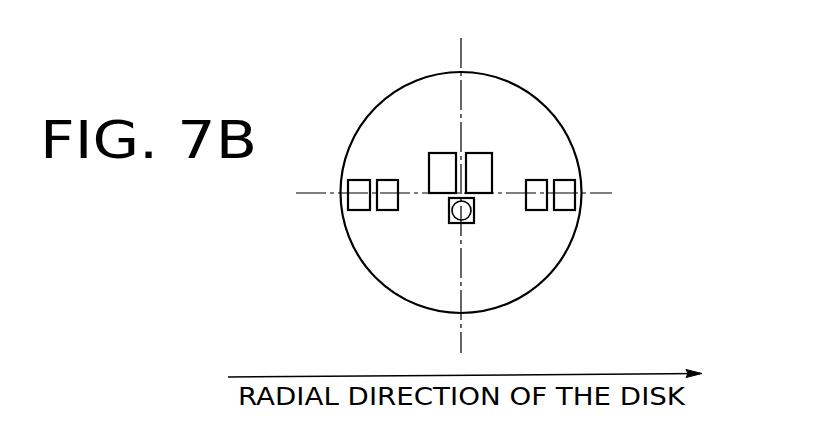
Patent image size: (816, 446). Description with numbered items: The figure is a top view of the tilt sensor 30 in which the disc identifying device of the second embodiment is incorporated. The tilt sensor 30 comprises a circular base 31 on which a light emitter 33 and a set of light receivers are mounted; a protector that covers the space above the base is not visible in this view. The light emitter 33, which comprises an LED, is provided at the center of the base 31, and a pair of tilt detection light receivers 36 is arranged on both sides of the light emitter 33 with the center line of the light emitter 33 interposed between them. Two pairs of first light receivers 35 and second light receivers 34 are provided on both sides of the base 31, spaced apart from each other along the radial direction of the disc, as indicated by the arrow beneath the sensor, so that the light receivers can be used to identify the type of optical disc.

The tilt sensor 30 is at (489, 173).
The base 31 is at (575, 152).
The light emitter 33 is at (477, 220).
The second light receivers 34 is at (360, 210).
The first light receivers 35 is at (385, 210).
The tilt detection light receivers 36 is at (445, 160).